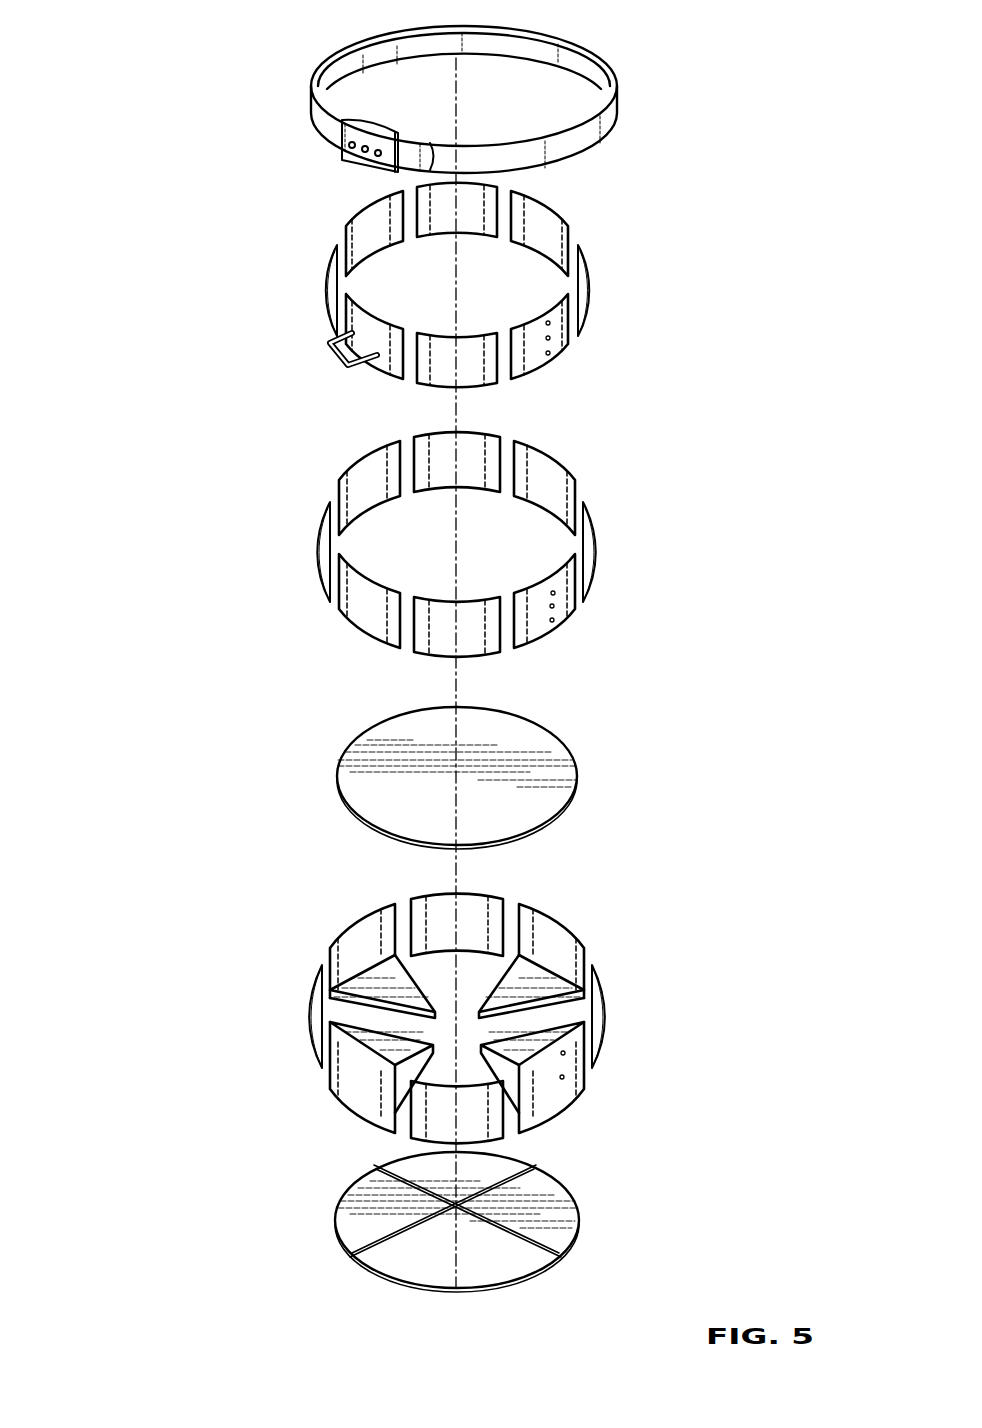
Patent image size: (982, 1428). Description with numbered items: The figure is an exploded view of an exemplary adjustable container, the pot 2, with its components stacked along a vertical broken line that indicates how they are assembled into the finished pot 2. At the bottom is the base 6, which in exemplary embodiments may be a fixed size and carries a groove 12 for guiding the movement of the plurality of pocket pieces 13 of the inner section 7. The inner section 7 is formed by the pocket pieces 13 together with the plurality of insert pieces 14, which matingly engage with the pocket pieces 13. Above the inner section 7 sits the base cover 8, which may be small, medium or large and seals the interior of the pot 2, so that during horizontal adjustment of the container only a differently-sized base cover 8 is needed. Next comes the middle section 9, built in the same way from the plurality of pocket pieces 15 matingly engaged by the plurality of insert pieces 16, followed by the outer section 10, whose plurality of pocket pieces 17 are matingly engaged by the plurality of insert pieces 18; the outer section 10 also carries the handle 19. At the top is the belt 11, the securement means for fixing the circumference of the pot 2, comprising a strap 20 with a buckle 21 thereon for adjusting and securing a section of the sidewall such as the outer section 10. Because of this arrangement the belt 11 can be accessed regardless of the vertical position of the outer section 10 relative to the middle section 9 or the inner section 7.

The pot 2 is at (160, 149).
The base 6 is at (271, 1184).
The inner section 7 is at (216, 1019).
The base cover 8 is at (263, 719).
The middle section 9 is at (233, 524).
The outer section 10 is at (246, 287).
The belt 11 is at (255, 92).
The groove 12 is at (426, 1226).
The pocket pieces 13 is at (360, 914).
The insert pieces 14 is at (440, 893).
The pocket pieces 15 is at (355, 463).
The insert pieces 16 is at (450, 432).
The pocket pieces 17 is at (358, 208).
The insert pieces 18 is at (328, 258).
The handle 19 is at (318, 356).
The strap 20 is at (570, 44).
The buckle 21 is at (356, 126).